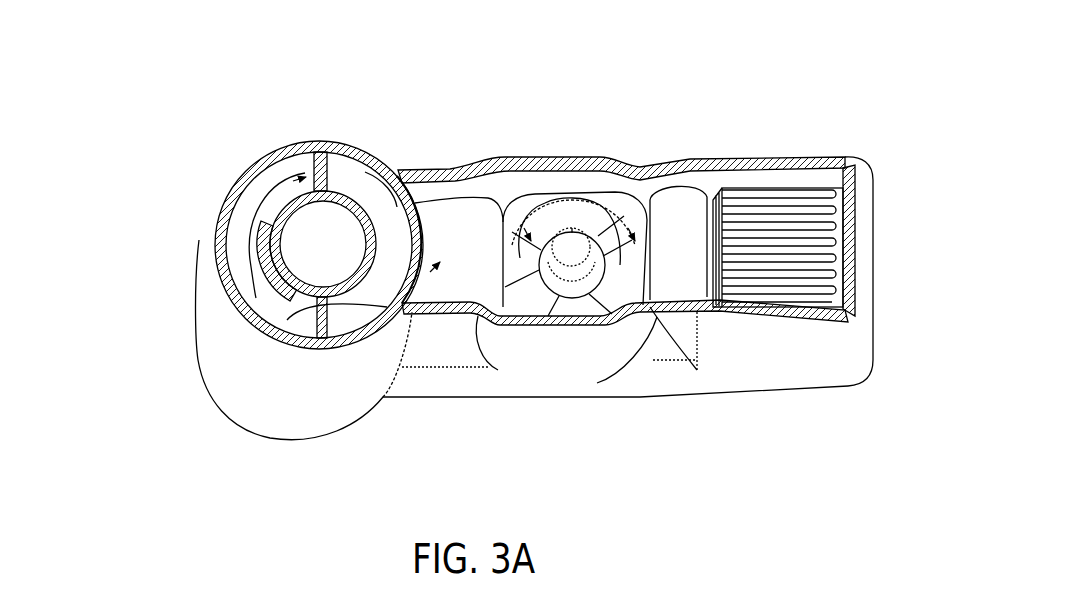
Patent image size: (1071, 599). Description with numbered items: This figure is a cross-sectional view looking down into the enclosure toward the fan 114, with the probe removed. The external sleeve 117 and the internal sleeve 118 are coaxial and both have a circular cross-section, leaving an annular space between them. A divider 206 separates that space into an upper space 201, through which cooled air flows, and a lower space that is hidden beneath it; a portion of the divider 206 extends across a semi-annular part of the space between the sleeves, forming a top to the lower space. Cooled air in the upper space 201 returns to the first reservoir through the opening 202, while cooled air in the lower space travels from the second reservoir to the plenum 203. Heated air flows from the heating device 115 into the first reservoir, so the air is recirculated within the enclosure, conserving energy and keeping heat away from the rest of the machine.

The fan 114 is at (565, 227).
The heating device 115 is at (754, 200).
The external sleeve 117 is at (252, 166).
The internal sleeve 118 is at (282, 272).
The upper space 201 is at (251, 203).
The opening 202 is at (410, 191).
The plenum 203 is at (338, 249).
The divider 206 is at (335, 176).